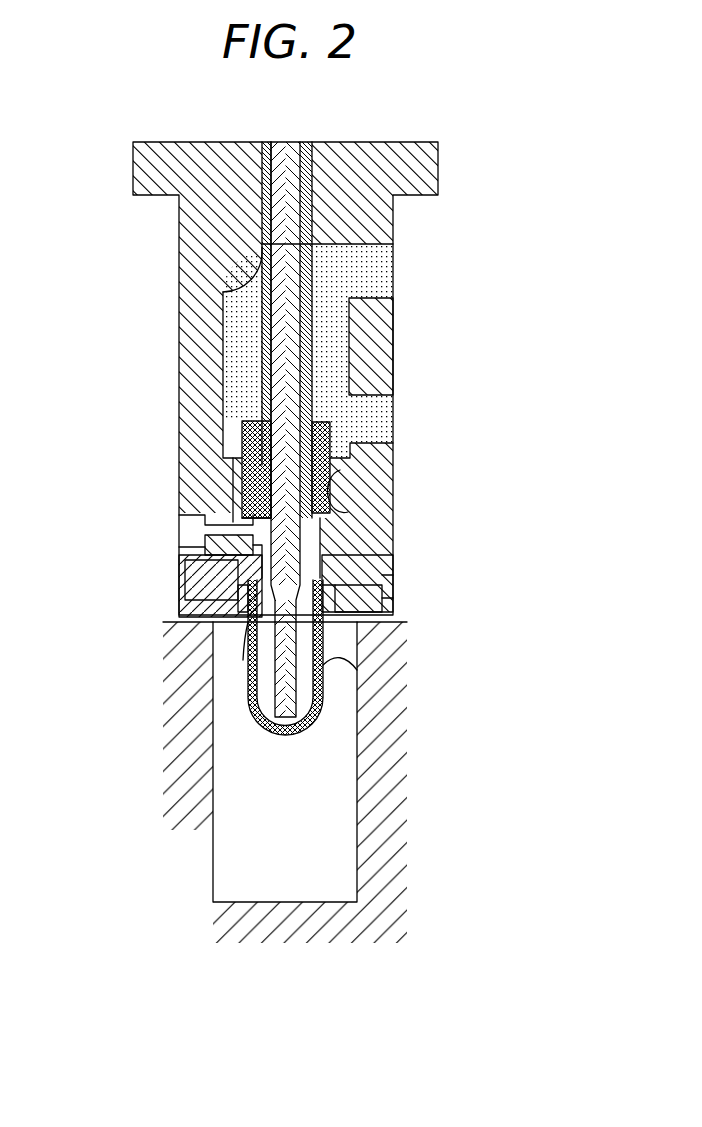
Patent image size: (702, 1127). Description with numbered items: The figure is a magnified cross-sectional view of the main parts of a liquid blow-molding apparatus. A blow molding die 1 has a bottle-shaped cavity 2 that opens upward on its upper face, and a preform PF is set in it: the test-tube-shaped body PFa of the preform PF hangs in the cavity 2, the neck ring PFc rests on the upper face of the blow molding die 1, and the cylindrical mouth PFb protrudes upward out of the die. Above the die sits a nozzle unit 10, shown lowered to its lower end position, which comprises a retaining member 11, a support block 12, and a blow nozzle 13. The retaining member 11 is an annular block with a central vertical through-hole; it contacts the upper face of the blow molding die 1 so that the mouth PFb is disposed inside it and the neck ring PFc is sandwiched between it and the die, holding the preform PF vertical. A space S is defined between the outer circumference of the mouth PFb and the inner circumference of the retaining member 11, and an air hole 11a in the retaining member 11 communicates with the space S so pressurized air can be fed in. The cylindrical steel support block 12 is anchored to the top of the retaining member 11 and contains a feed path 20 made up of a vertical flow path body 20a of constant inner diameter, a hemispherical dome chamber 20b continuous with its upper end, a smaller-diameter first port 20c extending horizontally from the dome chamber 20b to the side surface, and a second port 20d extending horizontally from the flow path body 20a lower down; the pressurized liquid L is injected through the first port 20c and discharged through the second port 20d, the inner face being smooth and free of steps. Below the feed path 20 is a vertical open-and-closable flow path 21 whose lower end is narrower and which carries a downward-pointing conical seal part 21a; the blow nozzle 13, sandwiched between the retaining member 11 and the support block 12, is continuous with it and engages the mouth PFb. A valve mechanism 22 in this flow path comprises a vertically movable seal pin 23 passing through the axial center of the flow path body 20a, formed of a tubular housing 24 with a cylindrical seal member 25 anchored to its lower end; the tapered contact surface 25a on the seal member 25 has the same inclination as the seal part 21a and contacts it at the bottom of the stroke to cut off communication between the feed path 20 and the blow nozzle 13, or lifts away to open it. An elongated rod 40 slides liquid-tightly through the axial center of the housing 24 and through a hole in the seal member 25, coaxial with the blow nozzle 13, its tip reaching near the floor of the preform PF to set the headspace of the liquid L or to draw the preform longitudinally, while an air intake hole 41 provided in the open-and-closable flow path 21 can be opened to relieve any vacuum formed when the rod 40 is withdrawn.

The blow molding die 1 is at (312, 804).
The cavity 2 is at (357, 835).
The nozzle unit 10 is at (262, 378).
The retaining member 11 is at (282, 586).
The air hole 11a is at (385, 585).
The support block 12 is at (174, 303).
The blow nozzle 13 is at (230, 558).
The feed path 20 is at (281, 351).
The flow path body 20a is at (235, 352).
The dome chamber 20b is at (229, 274).
The first port 20c is at (374, 270).
The second port 20d is at (377, 415).
The open-and-closable flow path 21 is at (236, 506).
The seal part 21a is at (330, 476).
The valve mechanism 22 is at (235, 511).
The seal pin 23 is at (254, 210).
The housing 24 is at (256, 162).
The seal member 25 is at (236, 430).
The contact surface 25a is at (333, 507).
The rod 40 is at (276, 328).
The air intake hole 41 is at (200, 524).
The pressurized liquid L is at (240, 402).
The space S is at (163, 618).
The preform PF is at (330, 697).
The body PFa is at (323, 622).
The mouth PFb is at (333, 588).
The neck ring PFc is at (240, 660).